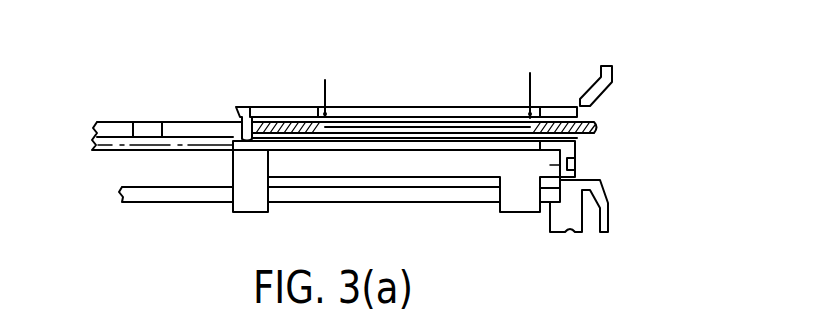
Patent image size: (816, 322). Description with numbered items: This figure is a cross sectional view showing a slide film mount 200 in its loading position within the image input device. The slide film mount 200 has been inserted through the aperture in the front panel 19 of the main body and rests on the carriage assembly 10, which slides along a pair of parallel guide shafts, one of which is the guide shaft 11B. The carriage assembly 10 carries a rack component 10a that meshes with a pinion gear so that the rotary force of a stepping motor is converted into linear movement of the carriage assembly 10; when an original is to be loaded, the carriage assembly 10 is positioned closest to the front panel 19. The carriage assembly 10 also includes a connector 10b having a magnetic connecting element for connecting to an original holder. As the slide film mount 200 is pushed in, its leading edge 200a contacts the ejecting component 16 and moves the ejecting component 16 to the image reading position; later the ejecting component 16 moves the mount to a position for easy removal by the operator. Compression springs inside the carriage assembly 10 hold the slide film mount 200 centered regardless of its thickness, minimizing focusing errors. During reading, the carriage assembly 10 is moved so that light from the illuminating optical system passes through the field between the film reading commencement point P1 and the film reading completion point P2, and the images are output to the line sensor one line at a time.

The carriage assembly 10 is at (296, 148).
The rack component 10a is at (113, 133).
The connector 10b is at (577, 170).
The guide shaft 11B is at (413, 192).
The ejecting component 16 is at (247, 116).
The front panel 19 is at (611, 214).
The slide film mount 200 is at (600, 128).
The leading edge 200a is at (273, 111).
The film reading commencement point P1 is at (334, 82).
The film reading completion point P2 is at (511, 82).